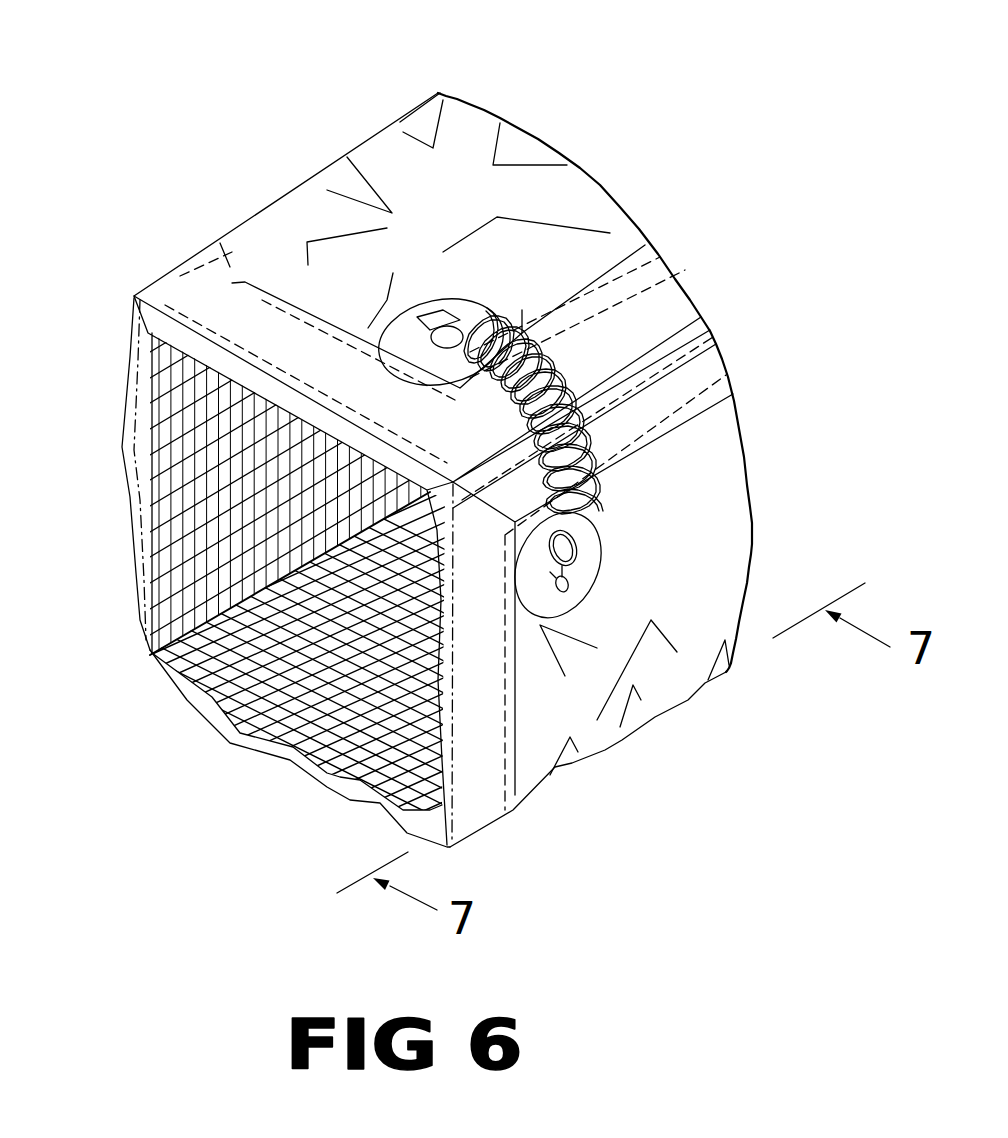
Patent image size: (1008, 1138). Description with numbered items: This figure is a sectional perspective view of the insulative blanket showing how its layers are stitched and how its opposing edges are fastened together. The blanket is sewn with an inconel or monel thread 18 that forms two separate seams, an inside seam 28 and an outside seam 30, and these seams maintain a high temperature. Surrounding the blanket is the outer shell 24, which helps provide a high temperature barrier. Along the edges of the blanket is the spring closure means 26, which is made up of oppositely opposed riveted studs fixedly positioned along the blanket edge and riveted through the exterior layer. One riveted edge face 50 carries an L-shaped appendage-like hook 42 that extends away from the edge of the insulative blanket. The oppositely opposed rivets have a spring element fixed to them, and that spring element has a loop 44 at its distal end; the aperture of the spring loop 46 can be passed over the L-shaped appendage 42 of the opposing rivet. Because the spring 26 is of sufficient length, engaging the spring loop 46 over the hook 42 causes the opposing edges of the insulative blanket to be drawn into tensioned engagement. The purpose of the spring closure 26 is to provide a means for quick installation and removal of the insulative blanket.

The inconel or monel thread 18 is at (228, 340).
The outer shell 24 is at (308, 167).
The spring closure means 26 is at (580, 395).
The inside seam 28 is at (310, 725).
The outside seam 30 is at (317, 782).
The L-shaped appendage-like hook 42 is at (570, 581).
The loop 44 is at (440, 325).
The spring loop 46 is at (578, 550).
The riveted edge face 50 is at (455, 302).